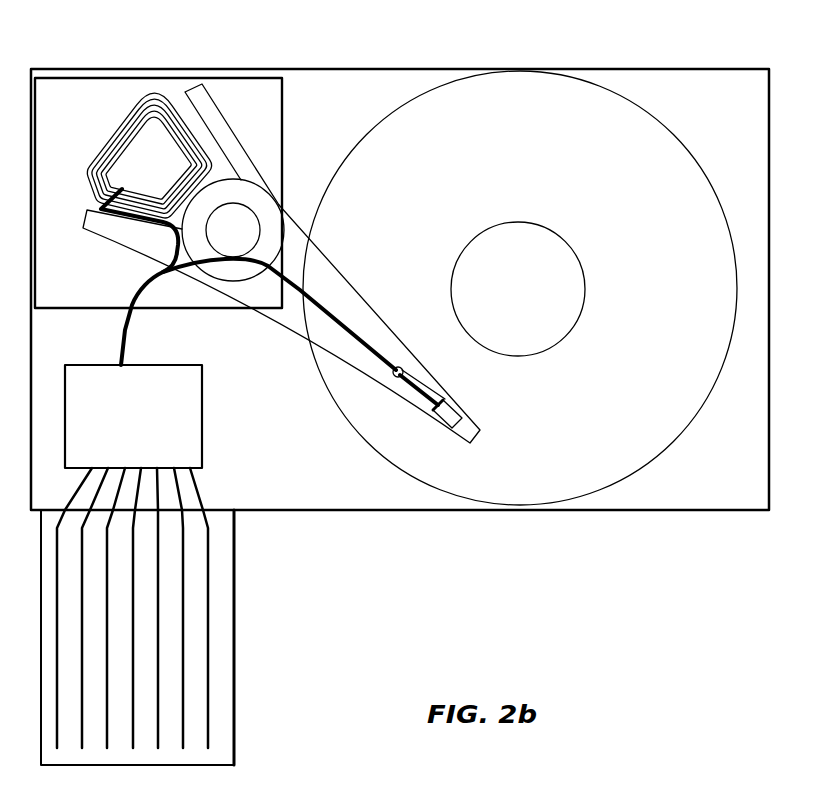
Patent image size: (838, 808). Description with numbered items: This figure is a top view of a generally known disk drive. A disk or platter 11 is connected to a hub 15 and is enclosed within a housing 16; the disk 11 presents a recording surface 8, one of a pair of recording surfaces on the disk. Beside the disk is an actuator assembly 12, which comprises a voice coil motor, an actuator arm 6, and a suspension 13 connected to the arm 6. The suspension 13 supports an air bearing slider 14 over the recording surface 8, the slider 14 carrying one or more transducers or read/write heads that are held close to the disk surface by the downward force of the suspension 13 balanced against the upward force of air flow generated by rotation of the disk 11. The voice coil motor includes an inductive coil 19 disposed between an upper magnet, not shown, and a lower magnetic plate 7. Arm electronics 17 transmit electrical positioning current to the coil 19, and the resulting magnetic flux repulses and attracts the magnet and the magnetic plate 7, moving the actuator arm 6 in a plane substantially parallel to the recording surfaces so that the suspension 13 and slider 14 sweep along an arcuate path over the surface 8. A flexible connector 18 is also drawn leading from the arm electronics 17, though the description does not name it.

The actuator arm 6 is at (225, 133).
The lower magnetic plate 7 is at (70, 258).
The recording surface 8 is at (456, 180).
The disk 11 is at (683, 145).
The actuator assembly 12 is at (288, 263).
The suspension 13 is at (360, 303).
The air bearing slider 14 is at (450, 407).
The hub 15 is at (498, 260).
The housing 16 is at (722, 68).
The arm electronics 17 is at (202, 422).
The flexible cable connector 18 is at (234, 668).
The inductive coil 19 is at (122, 123).